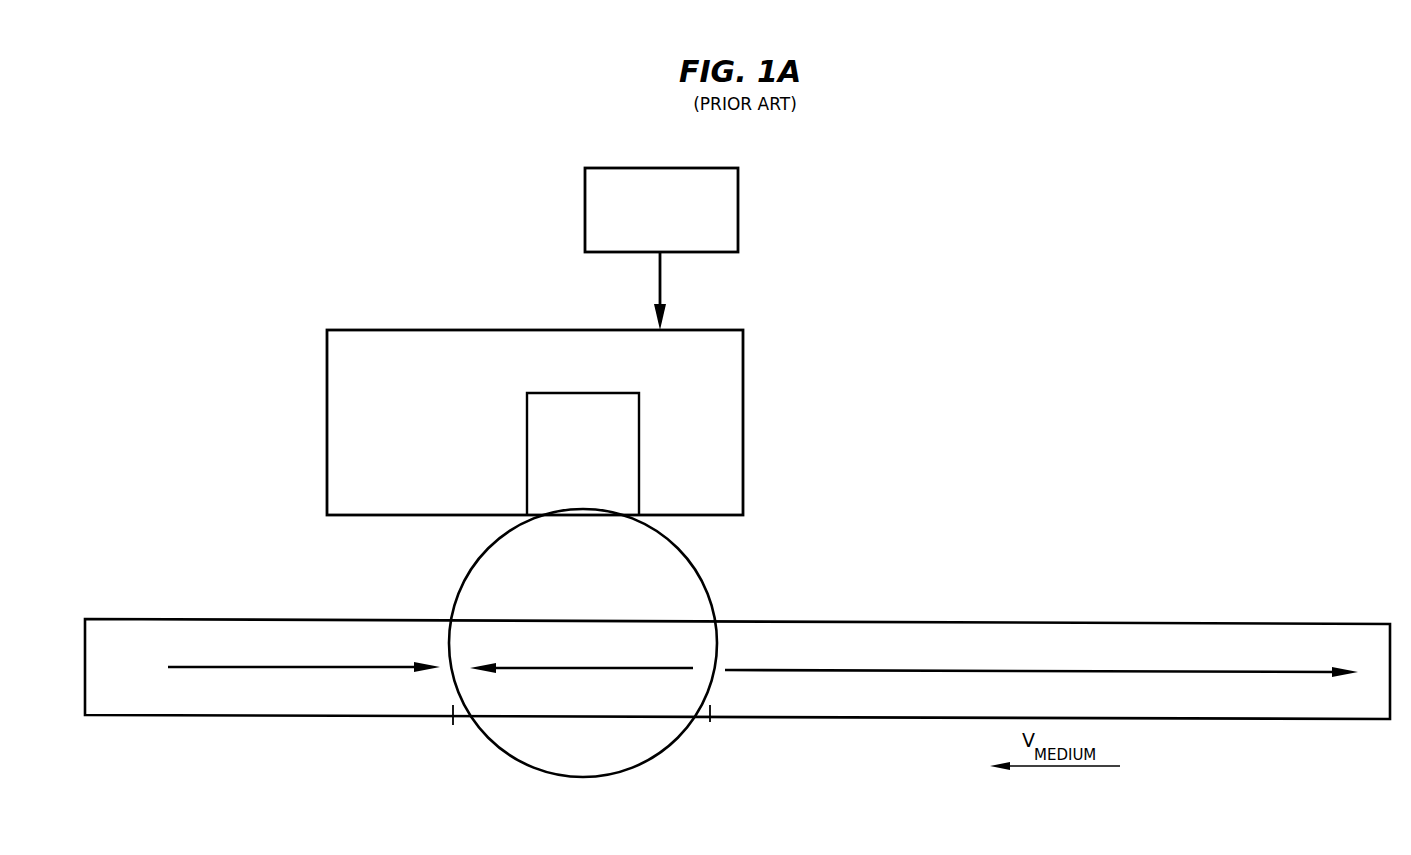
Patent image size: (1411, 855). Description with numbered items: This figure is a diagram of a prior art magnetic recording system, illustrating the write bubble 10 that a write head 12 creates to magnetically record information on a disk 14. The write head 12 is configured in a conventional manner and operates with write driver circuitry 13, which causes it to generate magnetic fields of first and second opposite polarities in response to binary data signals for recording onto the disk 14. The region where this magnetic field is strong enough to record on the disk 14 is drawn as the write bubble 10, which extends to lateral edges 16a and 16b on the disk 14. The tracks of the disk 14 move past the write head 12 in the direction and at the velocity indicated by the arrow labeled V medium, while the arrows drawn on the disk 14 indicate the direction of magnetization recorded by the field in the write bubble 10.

The write bubble 10 is at (600, 780).
The write head 12 is at (743, 415).
The write driver circuitry 13 is at (738, 203).
The disk 14 is at (855, 717).
The lateral edge 16a is at (453, 725).
The lateral edge 16b is at (710, 722).